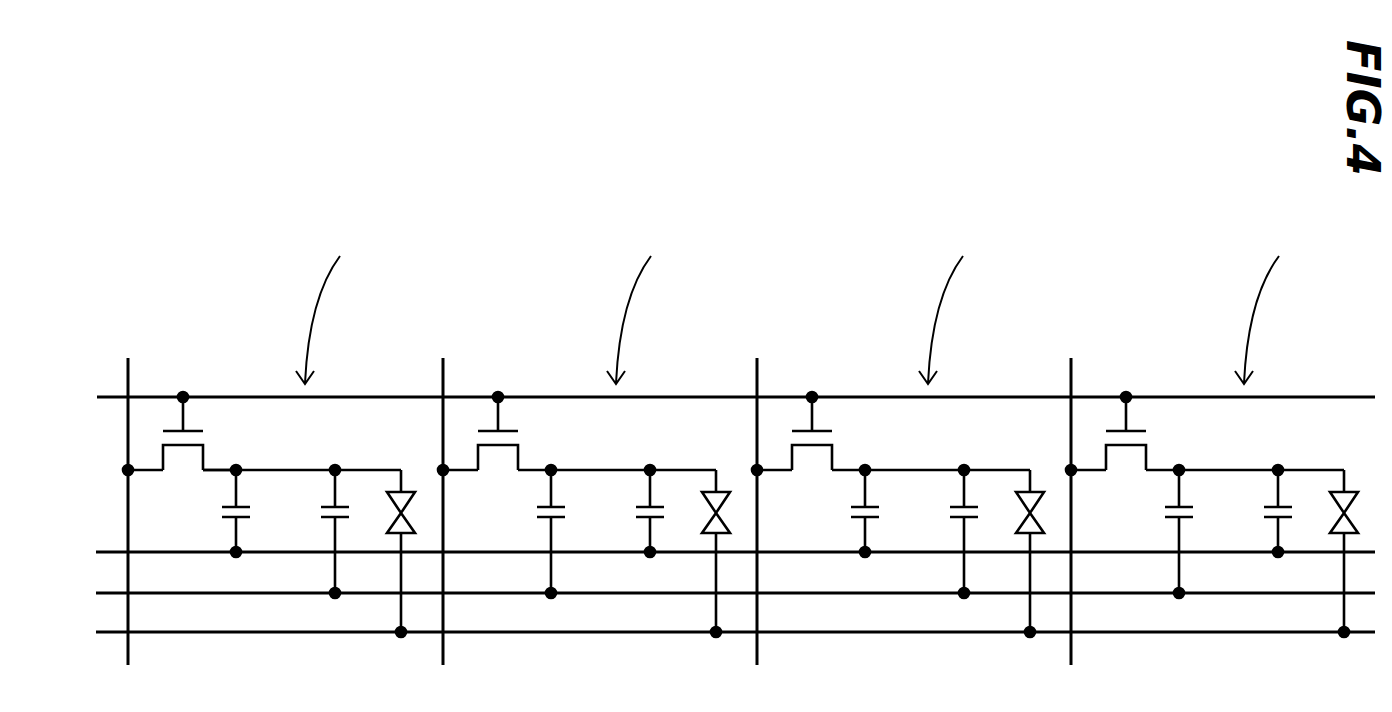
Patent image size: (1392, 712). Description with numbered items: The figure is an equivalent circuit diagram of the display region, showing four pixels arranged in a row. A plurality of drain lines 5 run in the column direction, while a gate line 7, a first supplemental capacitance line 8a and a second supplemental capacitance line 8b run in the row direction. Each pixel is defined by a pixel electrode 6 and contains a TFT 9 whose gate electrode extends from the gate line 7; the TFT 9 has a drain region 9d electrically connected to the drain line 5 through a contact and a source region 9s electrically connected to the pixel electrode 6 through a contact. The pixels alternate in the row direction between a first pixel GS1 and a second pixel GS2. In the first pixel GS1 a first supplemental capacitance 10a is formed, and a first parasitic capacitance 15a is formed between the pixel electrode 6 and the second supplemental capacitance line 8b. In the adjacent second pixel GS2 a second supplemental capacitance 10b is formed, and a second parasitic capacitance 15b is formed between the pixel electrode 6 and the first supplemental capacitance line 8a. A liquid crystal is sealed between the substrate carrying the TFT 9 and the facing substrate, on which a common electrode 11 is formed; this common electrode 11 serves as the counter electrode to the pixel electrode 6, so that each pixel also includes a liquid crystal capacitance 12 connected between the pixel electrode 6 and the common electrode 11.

The drain line 5 is at (130, 371).
The pixel electrode 6 is at (401, 468).
The gate line 7 is at (108, 396).
The first supplemental capacitance line 8a is at (110, 551).
The second supplemental capacitance line 8b is at (110, 592).
The TFT 9 is at (203, 438).
The drain region 9d is at (130, 478).
The source region 9s is at (238, 468).
The first supplemental capacitance 10a is at (523, 511).
The second supplemental capacitance 10b is at (838, 531).
The common electrode 11 is at (110, 632).
The liquid crystal capacitance 12 is at (413, 513).
The first parasitic capacitance 15a is at (623, 531).
The second parasitic capacitance 15b is at (937, 511).
The first pixel GS1 is at (640, 305).
The second pixel GS2 is at (954, 305).